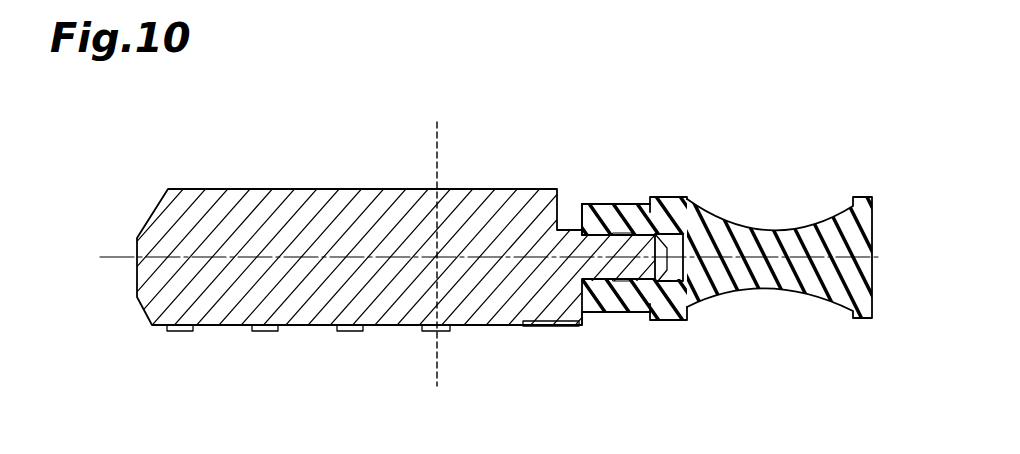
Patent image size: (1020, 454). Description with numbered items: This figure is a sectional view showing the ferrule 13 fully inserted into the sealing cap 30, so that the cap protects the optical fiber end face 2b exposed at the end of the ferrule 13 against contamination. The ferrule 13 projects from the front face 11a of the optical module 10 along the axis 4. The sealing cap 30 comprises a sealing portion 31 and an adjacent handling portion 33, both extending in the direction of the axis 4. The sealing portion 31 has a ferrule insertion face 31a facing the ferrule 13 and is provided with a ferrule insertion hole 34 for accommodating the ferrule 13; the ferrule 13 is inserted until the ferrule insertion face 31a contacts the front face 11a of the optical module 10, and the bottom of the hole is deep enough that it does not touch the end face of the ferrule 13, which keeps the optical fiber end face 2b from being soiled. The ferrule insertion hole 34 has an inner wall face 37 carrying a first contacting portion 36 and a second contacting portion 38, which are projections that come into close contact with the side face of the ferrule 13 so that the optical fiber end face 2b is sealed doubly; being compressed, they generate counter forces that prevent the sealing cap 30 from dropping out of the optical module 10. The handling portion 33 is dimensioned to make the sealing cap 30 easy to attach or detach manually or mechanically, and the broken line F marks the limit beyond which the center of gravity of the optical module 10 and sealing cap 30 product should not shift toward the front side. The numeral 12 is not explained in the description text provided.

The axis 4 is at (118, 254).
The optical module 10 is at (391, 248).
The terminal 12 is at (178, 333).
The front face 11a is at (582, 327).
The ferrule 13 is at (597, 312).
The sealing cap 30 is at (720, 260).
The sealing portion 31 is at (609, 260).
The ferrule insertion face 31a is at (582, 206).
The handling portion 33 is at (870, 339).
The ferrule insertion hole 34 is at (705, 221).
The first contacting portion 36 is at (600, 206).
The inner wall face 37 is at (656, 208).
The second contacting portion 38 is at (637, 206).
The optical fiber end face 2b is at (668, 268).
The broken line F is at (440, 137).